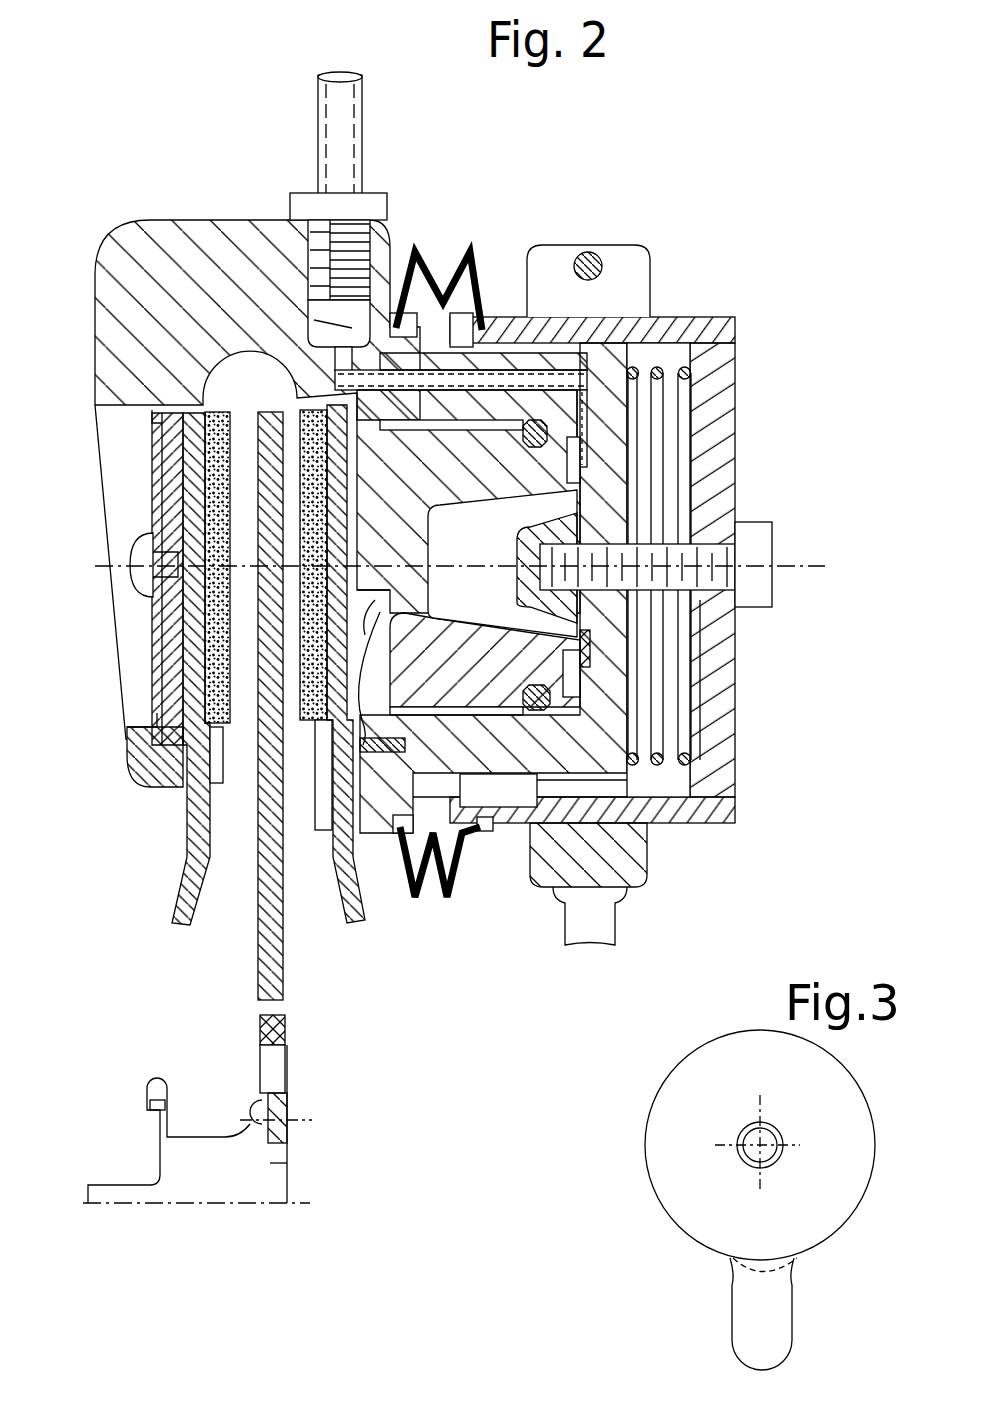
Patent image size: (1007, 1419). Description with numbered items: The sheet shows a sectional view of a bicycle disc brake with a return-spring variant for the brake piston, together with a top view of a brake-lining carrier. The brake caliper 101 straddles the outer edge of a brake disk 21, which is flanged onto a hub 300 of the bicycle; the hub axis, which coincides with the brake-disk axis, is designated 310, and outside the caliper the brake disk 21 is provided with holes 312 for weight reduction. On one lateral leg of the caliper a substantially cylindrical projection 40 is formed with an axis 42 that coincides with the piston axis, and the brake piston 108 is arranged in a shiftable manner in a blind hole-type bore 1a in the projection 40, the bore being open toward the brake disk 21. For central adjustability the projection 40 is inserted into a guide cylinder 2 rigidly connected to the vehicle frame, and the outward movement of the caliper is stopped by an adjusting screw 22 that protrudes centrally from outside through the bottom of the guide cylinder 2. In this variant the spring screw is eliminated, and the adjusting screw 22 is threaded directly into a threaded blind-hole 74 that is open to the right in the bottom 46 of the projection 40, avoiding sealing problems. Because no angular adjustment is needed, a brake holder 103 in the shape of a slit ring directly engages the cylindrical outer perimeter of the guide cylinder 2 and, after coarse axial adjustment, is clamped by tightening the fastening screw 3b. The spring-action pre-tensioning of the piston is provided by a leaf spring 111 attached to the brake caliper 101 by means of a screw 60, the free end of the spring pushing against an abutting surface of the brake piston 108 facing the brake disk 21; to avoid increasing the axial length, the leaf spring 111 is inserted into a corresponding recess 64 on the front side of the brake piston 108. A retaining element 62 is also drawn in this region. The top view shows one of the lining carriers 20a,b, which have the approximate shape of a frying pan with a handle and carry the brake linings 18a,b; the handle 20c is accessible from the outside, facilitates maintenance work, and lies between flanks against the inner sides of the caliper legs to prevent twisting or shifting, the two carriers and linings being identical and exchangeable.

In FIG. 2, the brake caliper 101 is at (158, 243).
In FIG. 2, the blind hole-type bore 1a is at (492, 427).
In FIG. 2, the fastening screw 3b is at (593, 260).
In FIG. 2, the brake holder 103 is at (635, 268).
In FIG. 2, the guide cylinder 2 is at (720, 357).
In FIG. 2, the threaded blind-hole 74 is at (700, 500).
In FIG. 2, the adjusting screw 22 is at (760, 518).
In FIG. 2, the axis 42 is at (820, 565).
In FIG. 2, the brake piston 108 is at (390, 475).
In FIG. 2, the recess 64 is at (340, 633).
In FIG. 2, the leaf spring 111 is at (347, 663).
In FIG. 2, the retaining clip 62 is at (388, 610).
In FIG. 2, the bottom 46 is at (700, 663).
In FIG. 2, the cylindrical projection 40 is at (577, 748).
In FIG. 2, the screw 60 is at (362, 745).
In FIG. 2, the brake disk 21 is at (273, 930).
In FIG. 2, the holes 312 is at (275, 1063).
In FIG. 2, the hub 300 is at (273, 1163).
In FIG. 2, the hub axis 310 is at (282, 1207).
In FIG. 3, the lining carriers 20a,b is at (667, 1155).
In FIG. 3, the brake linings 18a,b is at (795, 1262).
In FIG. 3, the handle 20c is at (740, 1328).